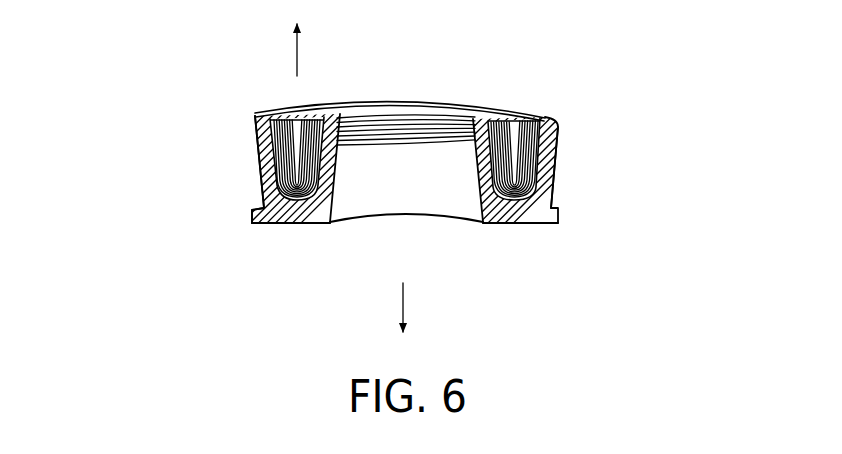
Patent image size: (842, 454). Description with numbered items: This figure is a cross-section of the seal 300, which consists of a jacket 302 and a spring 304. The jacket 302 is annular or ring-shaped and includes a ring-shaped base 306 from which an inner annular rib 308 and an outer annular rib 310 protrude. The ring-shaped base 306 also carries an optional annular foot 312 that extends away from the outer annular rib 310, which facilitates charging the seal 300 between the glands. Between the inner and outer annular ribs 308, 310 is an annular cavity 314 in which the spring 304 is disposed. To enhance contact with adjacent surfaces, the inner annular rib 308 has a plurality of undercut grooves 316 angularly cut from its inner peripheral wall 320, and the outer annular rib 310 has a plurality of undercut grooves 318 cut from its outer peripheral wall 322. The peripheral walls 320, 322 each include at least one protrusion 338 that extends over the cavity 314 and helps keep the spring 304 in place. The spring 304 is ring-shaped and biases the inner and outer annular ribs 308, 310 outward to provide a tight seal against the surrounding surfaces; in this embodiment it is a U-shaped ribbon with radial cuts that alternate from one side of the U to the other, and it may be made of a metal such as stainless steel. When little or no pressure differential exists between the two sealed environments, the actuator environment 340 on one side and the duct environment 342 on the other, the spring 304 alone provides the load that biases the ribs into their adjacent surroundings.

The seal 300 is at (585, 122).
The jacket 302 is at (268, 201).
The spring 304 is at (282, 113).
The ring-shaped base 306 is at (302, 225).
The inner annular rib 308 is at (335, 116).
The outer annular rib 310 is at (259, 161).
The annular foot 312 is at (264, 225).
The annular cavity 314 is at (508, 131).
The undercut grooves 316 is at (373, 116).
The undercut grooves 318 is at (245, 132).
The inner peripheral wall 320 is at (385, 180).
The outer peripheral wall 322 is at (558, 163).
The protrusion 338 is at (542, 128).
The actuator environment 340 is at (297, 49).
The duct environment 342 is at (403, 303).